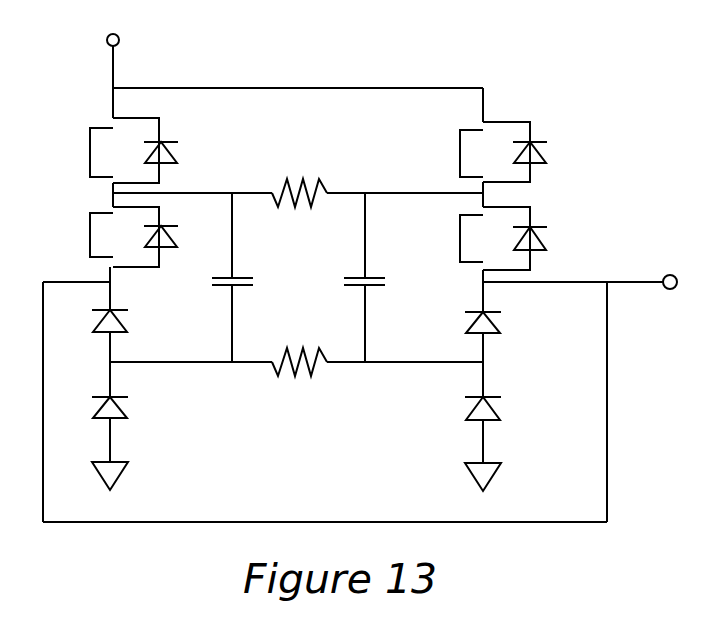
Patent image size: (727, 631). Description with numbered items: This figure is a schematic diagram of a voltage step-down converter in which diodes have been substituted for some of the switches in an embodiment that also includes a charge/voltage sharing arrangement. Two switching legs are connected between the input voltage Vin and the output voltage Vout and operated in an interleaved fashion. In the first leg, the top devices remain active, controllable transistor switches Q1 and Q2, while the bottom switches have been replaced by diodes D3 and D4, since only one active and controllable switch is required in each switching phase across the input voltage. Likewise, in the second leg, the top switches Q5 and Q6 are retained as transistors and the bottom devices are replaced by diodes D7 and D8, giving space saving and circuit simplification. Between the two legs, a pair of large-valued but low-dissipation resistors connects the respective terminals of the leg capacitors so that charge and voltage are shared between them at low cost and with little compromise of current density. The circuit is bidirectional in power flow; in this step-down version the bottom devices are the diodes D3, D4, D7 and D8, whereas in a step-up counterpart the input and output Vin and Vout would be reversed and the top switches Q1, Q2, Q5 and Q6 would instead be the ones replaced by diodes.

The top switch Q1 is at (134, 150).
The top switch Q2 is at (134, 237).
The top switch Q5 is at (503, 152).
The top switch Q6 is at (503, 238).
The diode D3 is at (126, 323).
The diode D4 is at (126, 410).
The diode D7 is at (499, 324).
The diode D8 is at (499, 410).
The input voltage Vin is at (136, 72).
The output voltage Vout is at (591, 296).